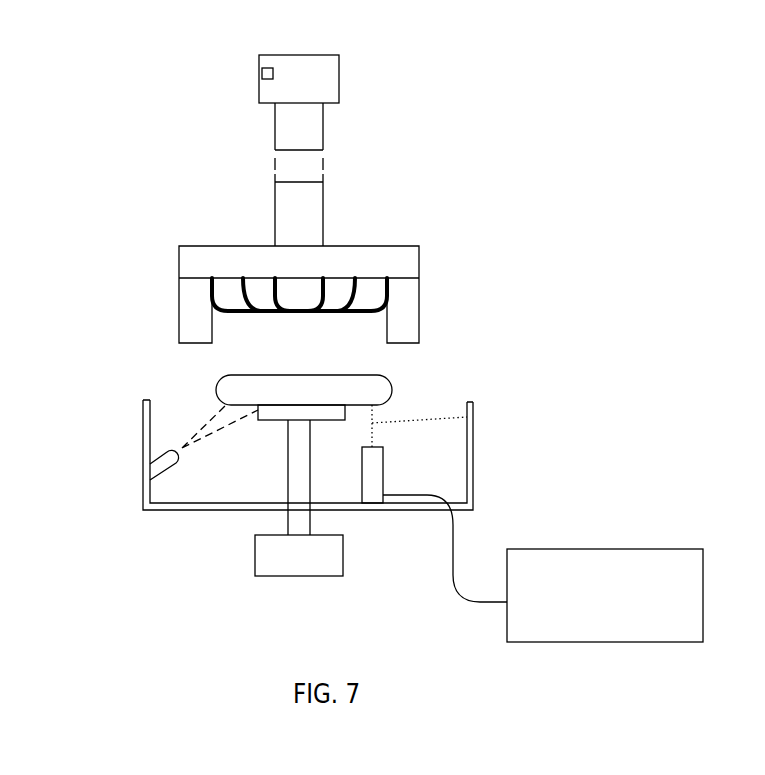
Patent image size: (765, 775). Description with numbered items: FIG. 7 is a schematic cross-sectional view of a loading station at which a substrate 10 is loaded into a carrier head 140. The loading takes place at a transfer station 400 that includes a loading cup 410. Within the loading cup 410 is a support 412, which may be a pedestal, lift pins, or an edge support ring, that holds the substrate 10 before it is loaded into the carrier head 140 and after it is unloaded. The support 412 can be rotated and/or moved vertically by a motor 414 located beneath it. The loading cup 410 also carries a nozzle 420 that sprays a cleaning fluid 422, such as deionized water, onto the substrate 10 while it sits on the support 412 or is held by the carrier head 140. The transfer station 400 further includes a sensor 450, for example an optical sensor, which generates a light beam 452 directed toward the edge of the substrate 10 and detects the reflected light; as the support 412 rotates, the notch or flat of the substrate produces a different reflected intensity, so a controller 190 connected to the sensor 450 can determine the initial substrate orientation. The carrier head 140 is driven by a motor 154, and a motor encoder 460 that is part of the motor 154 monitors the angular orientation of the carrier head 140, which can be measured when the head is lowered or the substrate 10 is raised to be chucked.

The substrate 10 is at (304, 390).
The carrier head 140 is at (419, 312).
The motor 154 is at (339, 82).
The controller 190 is at (543, 568).
The transfer station 400 is at (484, 351).
The loading cup 410 is at (473, 442).
The support 412 is at (273, 420).
The motor 414 is at (343, 561).
The nozzle 420 is at (162, 463).
The cleaning fluid 422 is at (208, 421).
The sensor 450 is at (383, 470).
The light beam 452 is at (477, 413).
The motor encoder 460 is at (262, 72).